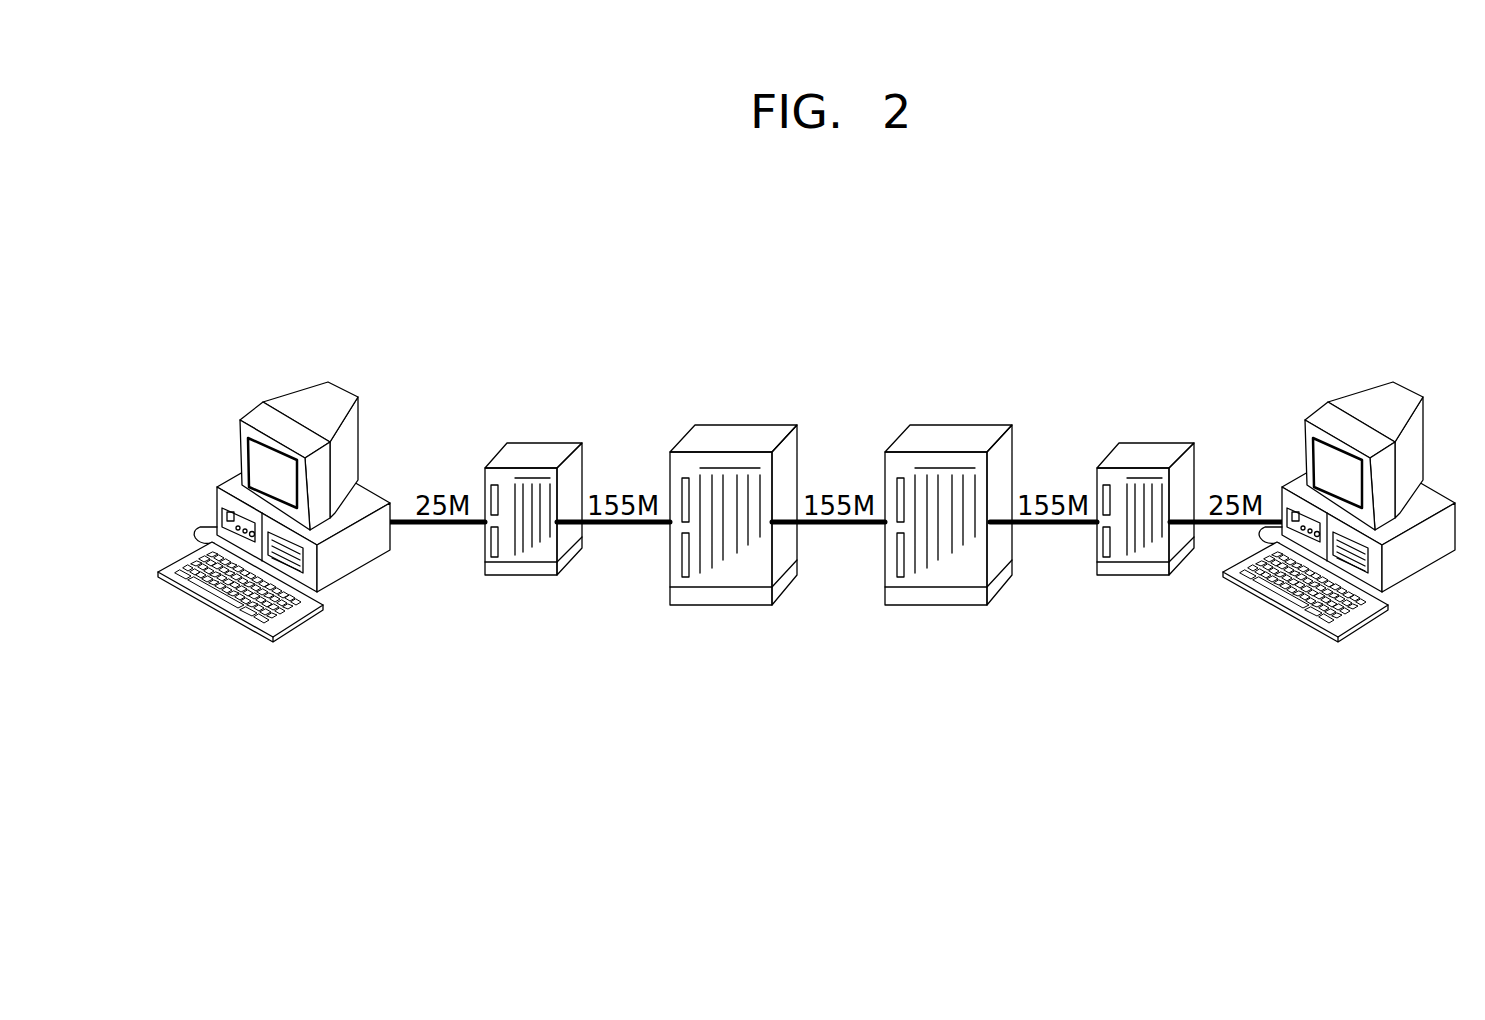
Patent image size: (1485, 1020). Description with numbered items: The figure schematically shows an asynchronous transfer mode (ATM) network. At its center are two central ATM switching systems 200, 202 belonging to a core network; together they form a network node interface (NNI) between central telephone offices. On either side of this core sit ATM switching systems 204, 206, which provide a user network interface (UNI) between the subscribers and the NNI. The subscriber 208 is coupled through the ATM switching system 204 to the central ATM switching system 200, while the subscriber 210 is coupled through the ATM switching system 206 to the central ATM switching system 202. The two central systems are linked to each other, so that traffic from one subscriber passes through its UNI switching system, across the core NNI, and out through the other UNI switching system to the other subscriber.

The central ATM switching system 200 is at (745, 425).
The central ATM switching system 202 is at (965, 425).
The ATM switching system 204 is at (545, 443).
The ATM switching system 206 is at (1158, 442).
The subscriber 208 is at (343, 383).
The subscriber 210 is at (1383, 385).